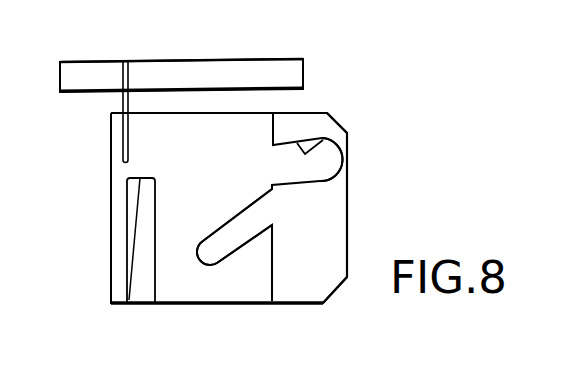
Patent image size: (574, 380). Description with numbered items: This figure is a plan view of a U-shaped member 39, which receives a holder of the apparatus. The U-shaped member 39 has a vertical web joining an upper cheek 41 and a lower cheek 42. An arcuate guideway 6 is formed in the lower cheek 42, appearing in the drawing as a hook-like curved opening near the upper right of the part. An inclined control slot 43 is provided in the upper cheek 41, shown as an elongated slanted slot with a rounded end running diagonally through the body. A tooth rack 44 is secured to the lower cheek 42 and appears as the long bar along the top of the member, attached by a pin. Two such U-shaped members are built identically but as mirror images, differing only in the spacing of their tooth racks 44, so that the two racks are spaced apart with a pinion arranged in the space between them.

The U-shaped member 39 is at (110, 247).
The upper cheek 41 is at (222, 166).
The lower cheek 42 is at (328, 240).
The inclined control slot 43 is at (232, 242).
The tooth rack 44 is at (193, 70).
The arcuate guideway 6 is at (323, 140).